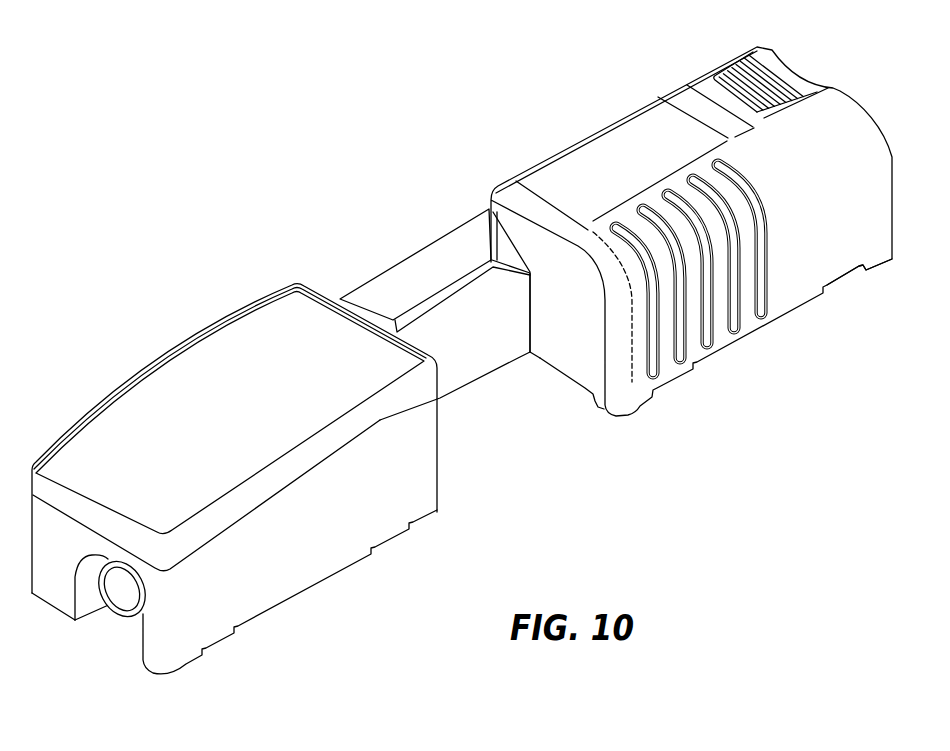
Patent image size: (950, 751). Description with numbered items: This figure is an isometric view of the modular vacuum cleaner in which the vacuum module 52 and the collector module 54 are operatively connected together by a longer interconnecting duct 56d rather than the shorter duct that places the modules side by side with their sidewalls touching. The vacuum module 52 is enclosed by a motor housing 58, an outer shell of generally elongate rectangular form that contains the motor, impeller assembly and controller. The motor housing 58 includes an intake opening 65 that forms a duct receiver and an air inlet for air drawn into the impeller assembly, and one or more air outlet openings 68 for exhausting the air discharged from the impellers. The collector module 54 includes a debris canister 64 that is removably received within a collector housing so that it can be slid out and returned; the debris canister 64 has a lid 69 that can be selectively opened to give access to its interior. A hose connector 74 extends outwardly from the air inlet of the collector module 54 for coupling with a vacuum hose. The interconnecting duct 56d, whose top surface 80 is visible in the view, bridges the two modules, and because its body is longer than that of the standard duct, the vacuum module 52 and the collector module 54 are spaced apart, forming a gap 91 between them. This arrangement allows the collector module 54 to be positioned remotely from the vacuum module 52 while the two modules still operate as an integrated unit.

The vacuum module 52 is at (691, 233).
The collector module 54 is at (234, 457).
The connecting bar 56d is at (435, 252).
The motor housing 58 is at (800, 268).
The debris canister 64 is at (317, 560).
The intake opening 65 is at (533, 322).
The air outlet openings 68 is at (792, 78).
The lid 69 is at (273, 333).
The hose connector 74 is at (125, 610).
The top surface of connecting bar 80 is at (385, 293).
The gap 91 is at (498, 410).